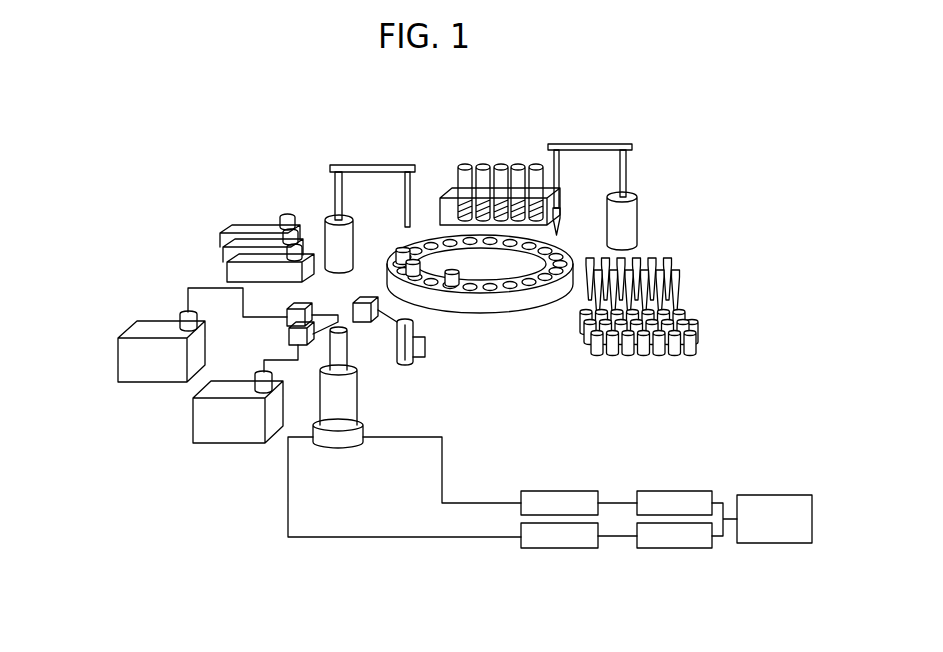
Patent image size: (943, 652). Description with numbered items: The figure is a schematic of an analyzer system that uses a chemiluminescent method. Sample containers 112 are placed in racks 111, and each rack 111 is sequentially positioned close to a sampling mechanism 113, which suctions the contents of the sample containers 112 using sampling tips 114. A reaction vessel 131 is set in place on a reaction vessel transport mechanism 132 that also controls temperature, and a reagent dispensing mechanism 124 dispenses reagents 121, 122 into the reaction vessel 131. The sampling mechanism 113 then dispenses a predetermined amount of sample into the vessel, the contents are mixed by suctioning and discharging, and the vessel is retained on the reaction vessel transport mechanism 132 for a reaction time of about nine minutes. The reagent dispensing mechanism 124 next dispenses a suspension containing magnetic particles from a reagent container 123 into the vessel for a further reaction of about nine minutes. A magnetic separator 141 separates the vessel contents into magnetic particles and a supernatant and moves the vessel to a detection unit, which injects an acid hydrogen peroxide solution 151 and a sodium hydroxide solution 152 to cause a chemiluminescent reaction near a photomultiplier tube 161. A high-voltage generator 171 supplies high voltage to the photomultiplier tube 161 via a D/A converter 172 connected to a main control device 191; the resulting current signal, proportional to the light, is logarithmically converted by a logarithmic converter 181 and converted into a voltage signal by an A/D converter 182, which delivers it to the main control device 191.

The rack 111 is at (444, 193).
The sample container 112 is at (537, 165).
The sampling mechanism 113 is at (593, 143).
The sampling tip 114 is at (670, 265).
The reagent 121 is at (218, 233).
The reagent 122 is at (220, 260).
The reagent container 123 is at (226, 279).
The reagent dispensing mechanism 124 is at (332, 162).
The reaction vessel 131 is at (689, 318).
The reaction vessel transport mechanism 132 is at (490, 314).
The magnetic separator 141 is at (425, 352).
The acid hydrogen peroxide solution 151 is at (118, 358).
The sodium hydroxide solution 152 is at (193, 425).
The photomultiplier tube 161 is at (360, 397).
The high-voltage generator 171 is at (556, 490).
The D/A converter 172 is at (673, 490).
The logarithmic converter 181 is at (558, 551).
The A/D converter 182 is at (675, 551).
The main control device 191 is at (774, 492).